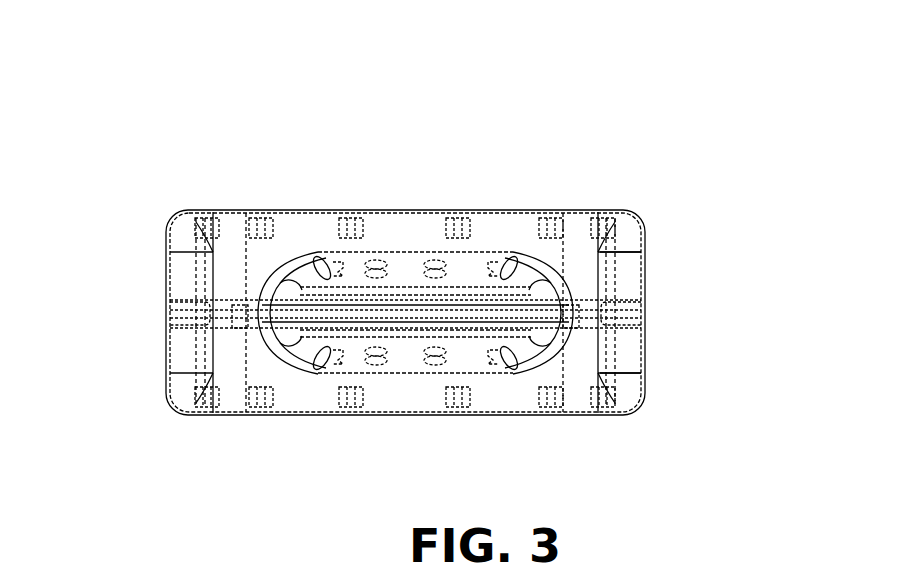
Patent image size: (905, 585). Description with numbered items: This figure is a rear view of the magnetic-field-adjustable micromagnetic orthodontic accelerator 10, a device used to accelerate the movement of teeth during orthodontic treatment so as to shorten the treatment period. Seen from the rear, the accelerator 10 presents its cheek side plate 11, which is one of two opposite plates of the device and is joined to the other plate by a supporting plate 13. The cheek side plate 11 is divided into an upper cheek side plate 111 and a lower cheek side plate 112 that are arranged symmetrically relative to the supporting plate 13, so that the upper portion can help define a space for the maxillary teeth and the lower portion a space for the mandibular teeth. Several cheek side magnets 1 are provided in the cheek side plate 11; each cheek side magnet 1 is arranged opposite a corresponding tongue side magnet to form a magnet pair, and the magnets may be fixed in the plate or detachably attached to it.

The magnetic-field-adjustable micromagnetic orthodontic accelerator 10 is at (396, 45).
The cheek side magnet 1 is at (360, 237).
The cheek side plate 11 is at (797, 238).
The upper cheek side plate 111 is at (625, 265).
The lower cheek side plate 112 is at (612, 359).
The supporting plate 13 is at (200, 312).